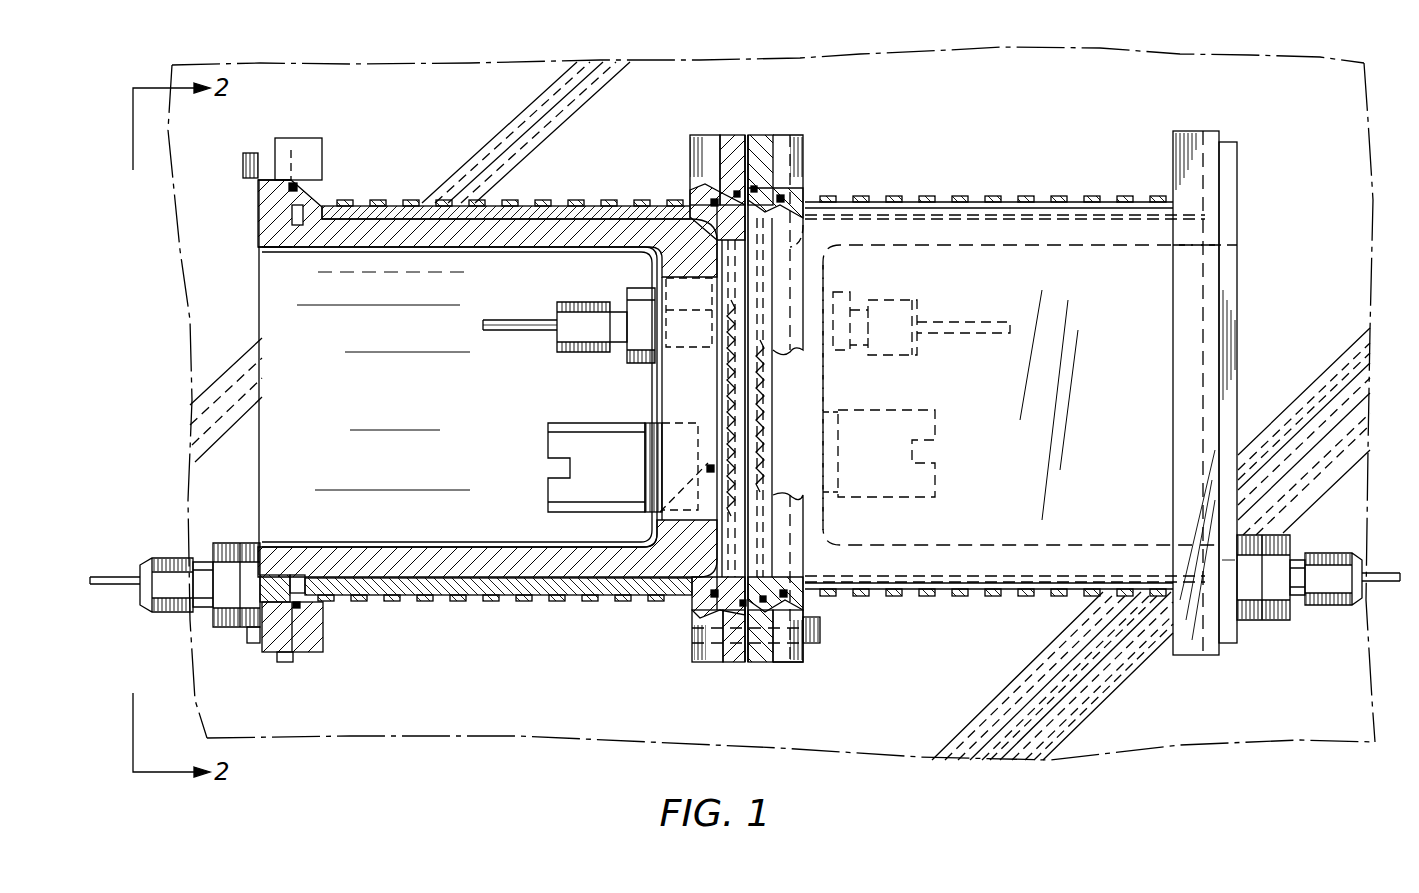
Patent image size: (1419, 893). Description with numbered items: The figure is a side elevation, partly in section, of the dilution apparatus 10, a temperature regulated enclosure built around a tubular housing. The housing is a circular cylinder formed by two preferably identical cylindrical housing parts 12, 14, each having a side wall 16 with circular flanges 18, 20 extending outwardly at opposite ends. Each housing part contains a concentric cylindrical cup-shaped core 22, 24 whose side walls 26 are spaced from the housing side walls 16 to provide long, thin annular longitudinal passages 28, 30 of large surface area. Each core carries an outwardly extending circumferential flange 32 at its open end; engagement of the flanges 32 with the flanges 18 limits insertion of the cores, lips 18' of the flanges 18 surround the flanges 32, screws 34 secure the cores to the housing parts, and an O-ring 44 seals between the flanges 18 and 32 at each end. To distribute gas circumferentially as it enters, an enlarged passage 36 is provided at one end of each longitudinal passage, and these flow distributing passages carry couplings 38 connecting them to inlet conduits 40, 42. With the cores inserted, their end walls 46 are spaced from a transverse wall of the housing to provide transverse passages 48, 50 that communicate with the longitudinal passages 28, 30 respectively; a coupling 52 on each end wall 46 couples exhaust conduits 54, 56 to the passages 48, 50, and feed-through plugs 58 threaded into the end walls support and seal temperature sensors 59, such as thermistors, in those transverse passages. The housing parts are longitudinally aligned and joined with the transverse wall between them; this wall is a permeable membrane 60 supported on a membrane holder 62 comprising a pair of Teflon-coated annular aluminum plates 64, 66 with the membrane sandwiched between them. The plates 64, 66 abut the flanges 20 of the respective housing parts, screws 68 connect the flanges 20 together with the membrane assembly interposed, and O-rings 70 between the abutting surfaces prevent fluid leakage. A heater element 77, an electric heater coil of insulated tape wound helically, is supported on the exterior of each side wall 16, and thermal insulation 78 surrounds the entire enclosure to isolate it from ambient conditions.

The dilution apparatus 10 is at (1014, 118).
The cylindrical housing part 12 is at (484, 202).
The cylindrical housing part 14 is at (1062, 204).
The side wall 16 is at (496, 602).
The circular flange 18 is at (318, 406).
The lip 18' is at (313, 677).
The circular flange 20 is at (690, 152).
The cup-shaped core 22 is at (373, 238).
The cup-shaped core 24 is at (1017, 242).
The core side wall 26 is at (580, 272).
The longitudinal passage 28 is at (430, 202).
The longitudinal passage 30 is at (915, 214).
The circumferential flange 32 is at (262, 213).
The screw 34 is at (244, 160).
The enlarged passage 36 is at (303, 227).
The coupling 38 is at (165, 558).
The inlet conduit 40 is at (115, 578).
The inlet conduit 42 is at (1366, 574).
The O-ring 44 is at (310, 612).
The end wall 46 is at (662, 256).
The transverse passage 48 is at (700, 276).
The transverse passage 50 is at (823, 280).
The coupling 52 is at (582, 352).
The exhaust conduit 54 is at (510, 333).
The exhaust conduit 56 is at (975, 335).
The feed-through plug 58 is at (553, 440).
The temperature sensor 59 is at (668, 510).
The permeable membrane 60 is at (745, 378).
The membrane holder 62 is at (753, 122).
The annular plate 64 is at (722, 138).
The annular plate 66 is at (778, 140).
The screw 68 is at (822, 630).
The O-ring 70 is at (714, 192).
The heater element 77 is at (546, 200).
The thermal insulation 78 is at (570, 76).